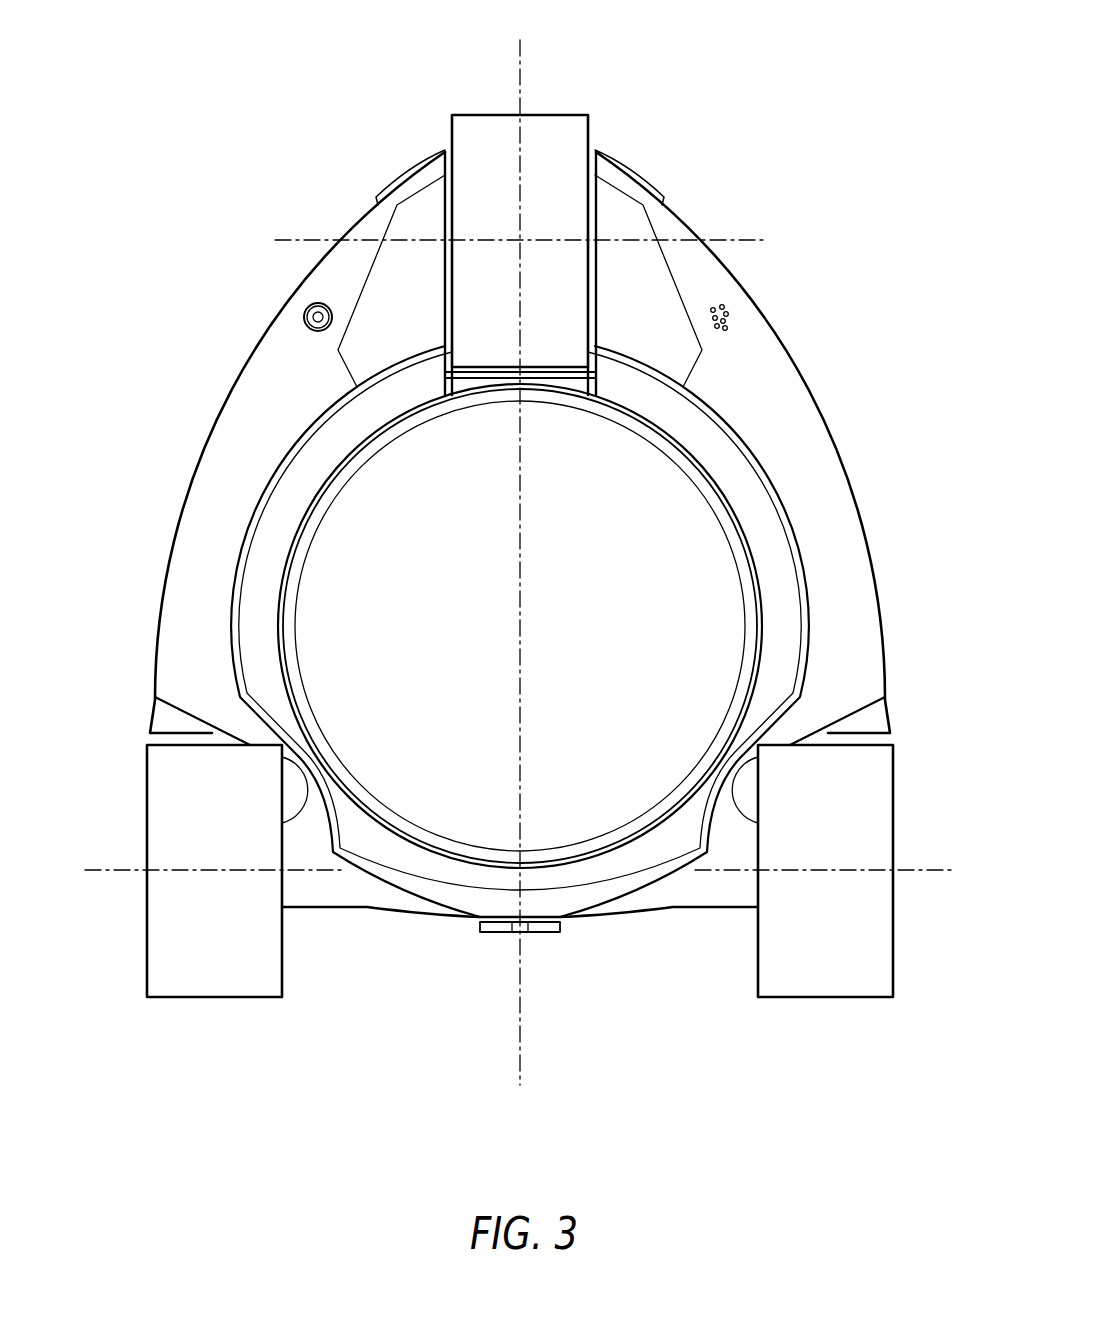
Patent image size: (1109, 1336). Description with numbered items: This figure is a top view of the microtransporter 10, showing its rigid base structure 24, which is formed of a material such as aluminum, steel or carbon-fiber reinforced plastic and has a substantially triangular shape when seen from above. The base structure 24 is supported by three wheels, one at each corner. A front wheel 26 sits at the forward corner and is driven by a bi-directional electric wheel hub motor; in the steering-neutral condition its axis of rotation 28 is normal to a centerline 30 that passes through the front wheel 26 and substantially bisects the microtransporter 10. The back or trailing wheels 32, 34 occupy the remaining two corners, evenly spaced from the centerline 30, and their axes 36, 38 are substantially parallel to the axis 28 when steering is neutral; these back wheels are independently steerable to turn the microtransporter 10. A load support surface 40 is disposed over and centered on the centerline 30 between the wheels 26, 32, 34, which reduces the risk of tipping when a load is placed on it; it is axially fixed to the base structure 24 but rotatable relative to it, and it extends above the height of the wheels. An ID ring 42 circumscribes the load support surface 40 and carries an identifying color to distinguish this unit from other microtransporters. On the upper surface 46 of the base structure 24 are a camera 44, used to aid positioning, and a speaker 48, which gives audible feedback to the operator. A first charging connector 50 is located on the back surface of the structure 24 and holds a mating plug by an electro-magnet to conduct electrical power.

The microtransporter 10 is at (550, 499).
The rigid base structure 24 is at (855, 478).
The front wheel 26 is at (592, 128).
The axis of rotation 28 is at (737, 240).
The centerline 30 is at (522, 58).
The second wheel 32 is at (895, 782).
The third wheel 34 is at (283, 978).
The axis of back wheel 36 is at (920, 870).
The axis of back wheel 38 is at (127, 870).
The load support surface 40 is at (340, 618).
The ID ring 42 is at (292, 522).
The camera 44 is at (305, 315).
The upper surface 46 is at (780, 378).
The speaker 48 is at (729, 318).
The first charging connector 50 is at (545, 935).